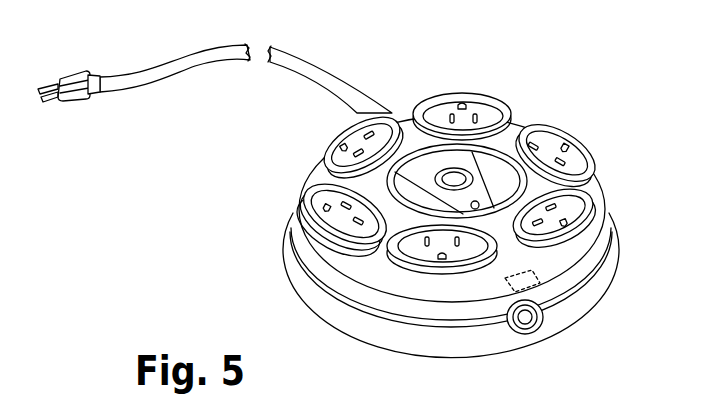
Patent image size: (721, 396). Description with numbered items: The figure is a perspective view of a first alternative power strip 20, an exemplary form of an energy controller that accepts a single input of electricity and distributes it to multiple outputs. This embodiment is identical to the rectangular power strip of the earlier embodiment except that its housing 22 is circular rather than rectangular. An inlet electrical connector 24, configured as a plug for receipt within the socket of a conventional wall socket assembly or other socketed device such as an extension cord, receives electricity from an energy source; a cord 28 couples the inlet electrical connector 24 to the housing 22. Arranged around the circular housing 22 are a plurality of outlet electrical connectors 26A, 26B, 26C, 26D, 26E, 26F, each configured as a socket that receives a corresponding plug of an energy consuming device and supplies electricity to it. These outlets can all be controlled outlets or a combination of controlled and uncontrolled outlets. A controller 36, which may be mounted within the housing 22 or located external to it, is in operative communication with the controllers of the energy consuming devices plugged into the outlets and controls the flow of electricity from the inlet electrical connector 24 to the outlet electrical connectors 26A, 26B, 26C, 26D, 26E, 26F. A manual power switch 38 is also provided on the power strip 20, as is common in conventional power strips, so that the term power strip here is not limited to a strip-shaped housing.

The power strip 20 is at (576, 95).
The housing 22 is at (355, 260).
The inlet electrical connector 24 is at (47, 83).
The cord 28 is at (152, 73).
The outlet electrical connector 26A is at (502, 110).
The outlet electrical connector 26B is at (582, 162).
The outlet electrical connector 26C is at (576, 231).
The outlet electrical connector 26D is at (427, 263).
The outlet electrical connector 26E is at (317, 200).
The outlet electrical connector 26F is at (340, 142).
The controller 36 is at (545, 287).
The manual power switch 38 is at (454, 180).